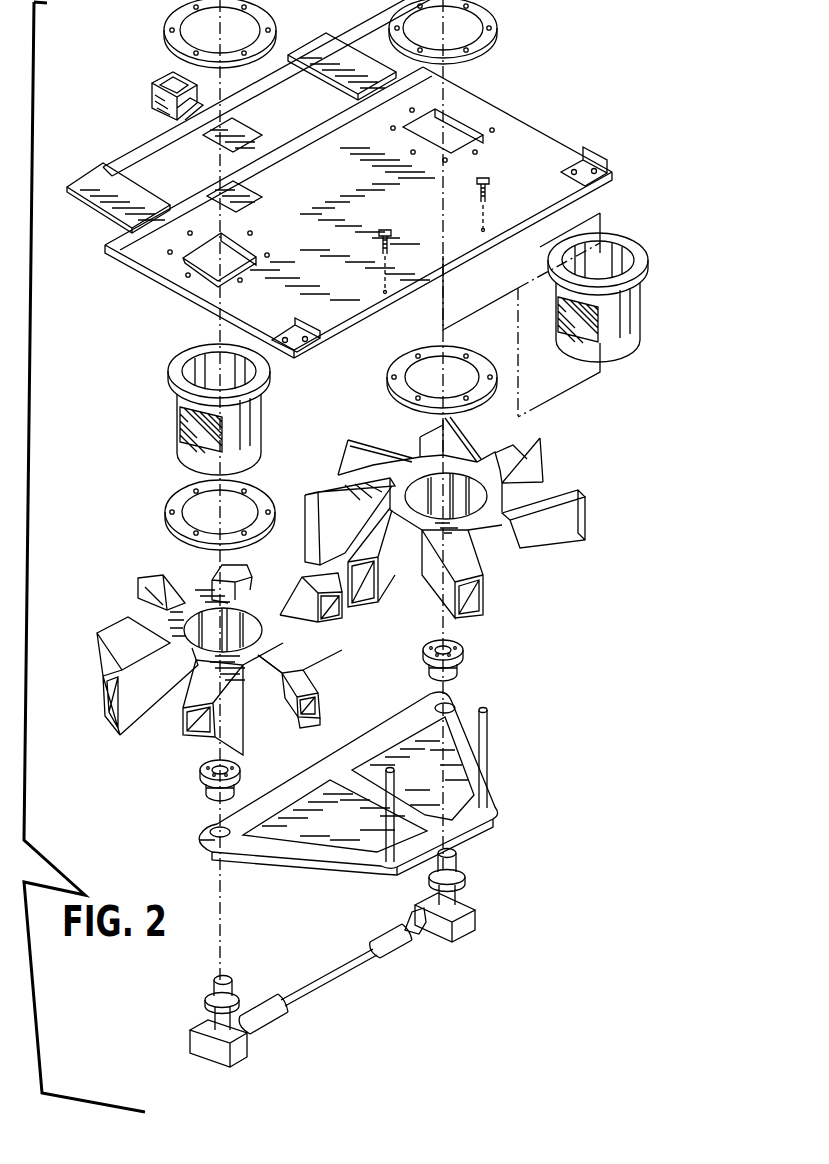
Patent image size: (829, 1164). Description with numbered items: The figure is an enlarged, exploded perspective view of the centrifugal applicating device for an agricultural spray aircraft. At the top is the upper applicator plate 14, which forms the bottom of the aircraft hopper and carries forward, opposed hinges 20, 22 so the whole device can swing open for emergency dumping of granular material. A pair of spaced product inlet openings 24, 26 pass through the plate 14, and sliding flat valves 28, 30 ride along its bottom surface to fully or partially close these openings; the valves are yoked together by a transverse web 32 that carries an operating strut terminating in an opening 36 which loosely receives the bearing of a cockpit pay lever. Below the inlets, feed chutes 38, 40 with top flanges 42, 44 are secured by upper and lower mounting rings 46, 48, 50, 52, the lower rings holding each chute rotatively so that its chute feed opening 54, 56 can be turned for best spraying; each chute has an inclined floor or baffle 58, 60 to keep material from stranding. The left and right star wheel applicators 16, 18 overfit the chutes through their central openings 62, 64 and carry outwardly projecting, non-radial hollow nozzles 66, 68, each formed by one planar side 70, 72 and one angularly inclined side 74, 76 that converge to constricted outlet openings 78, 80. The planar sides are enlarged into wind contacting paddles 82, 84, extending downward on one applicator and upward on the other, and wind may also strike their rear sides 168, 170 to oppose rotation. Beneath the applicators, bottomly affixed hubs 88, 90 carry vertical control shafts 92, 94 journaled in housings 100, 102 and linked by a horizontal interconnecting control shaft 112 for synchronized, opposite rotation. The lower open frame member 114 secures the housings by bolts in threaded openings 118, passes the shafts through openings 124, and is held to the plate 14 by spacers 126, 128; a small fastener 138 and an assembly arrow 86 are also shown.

The upper applicator plate 14 is at (537, 140).
The star wheel applicator 16 is at (221, 660).
The star wheel applicator 18 is at (446, 526).
The hinge 20 is at (312, 324).
The hinge 22 is at (606, 160).
The product inlet opening 24 is at (185, 290).
The product inlet opening 26 is at (466, 128).
The sliding flat valve 28 is at (107, 197).
The sliding flat valve 30 is at (347, 62).
The transverse web 32 is at (157, 142).
The operating strut opening 36 is at (172, 76).
The feed chute 38 is at (199, 409).
The feed chute 40 is at (601, 299).
The top flange 42 is at (170, 375).
The top flange 44 is at (647, 255).
The upper mounting ring 46 is at (170, 30).
The lower mounting ring 48 is at (168, 514).
The upper mounting ring 50 is at (496, 40).
The lower mounting ring 52 is at (490, 390).
The chute feed opening 54 is at (177, 407).
The chute feed opening 56 is at (558, 302).
The inclined floor or baffle 58 is at (190, 428).
The inclined floor or baffle 60 is at (585, 328).
The central opening 62 is at (195, 625).
The central opening 64 is at (470, 494).
The hollow nozzle 66 is at (243, 567).
The hollow nozzle 68 is at (348, 470).
The planar side 70 is at (285, 675).
The planar side 72 is at (335, 511).
The angularly inclined side 74 is at (257, 692).
The angularly inclined side 76 is at (398, 572).
The constricted outlet opening 78 is at (307, 707).
The constricted outlet opening 80 is at (472, 608).
The wind contacting paddle 82 is at (128, 723).
The wind contacting paddle 84 is at (578, 511).
The drive rod assembly 86 is at (327, 964).
The hub 88 is at (200, 780).
The hub 90 is at (442, 660).
The vertical control shaft 92 is at (215, 990).
The vertical control shaft 94 is at (456, 866).
The housing 100 is at (200, 1058).
The housing 102 is at (455, 893).
The interconnecting control shaft 112 is at (368, 955).
The lower open frame member 114 is at (380, 778).
The threaded opening 118 is at (424, 652).
The opening 124 is at (452, 710).
The spacer 126 is at (397, 823).
The spacer 128 is at (490, 757).
The screw 138 is at (390, 238).
The rear side of paddle 168 is at (312, 728).
The rear side of paddle 170 is at (320, 497).